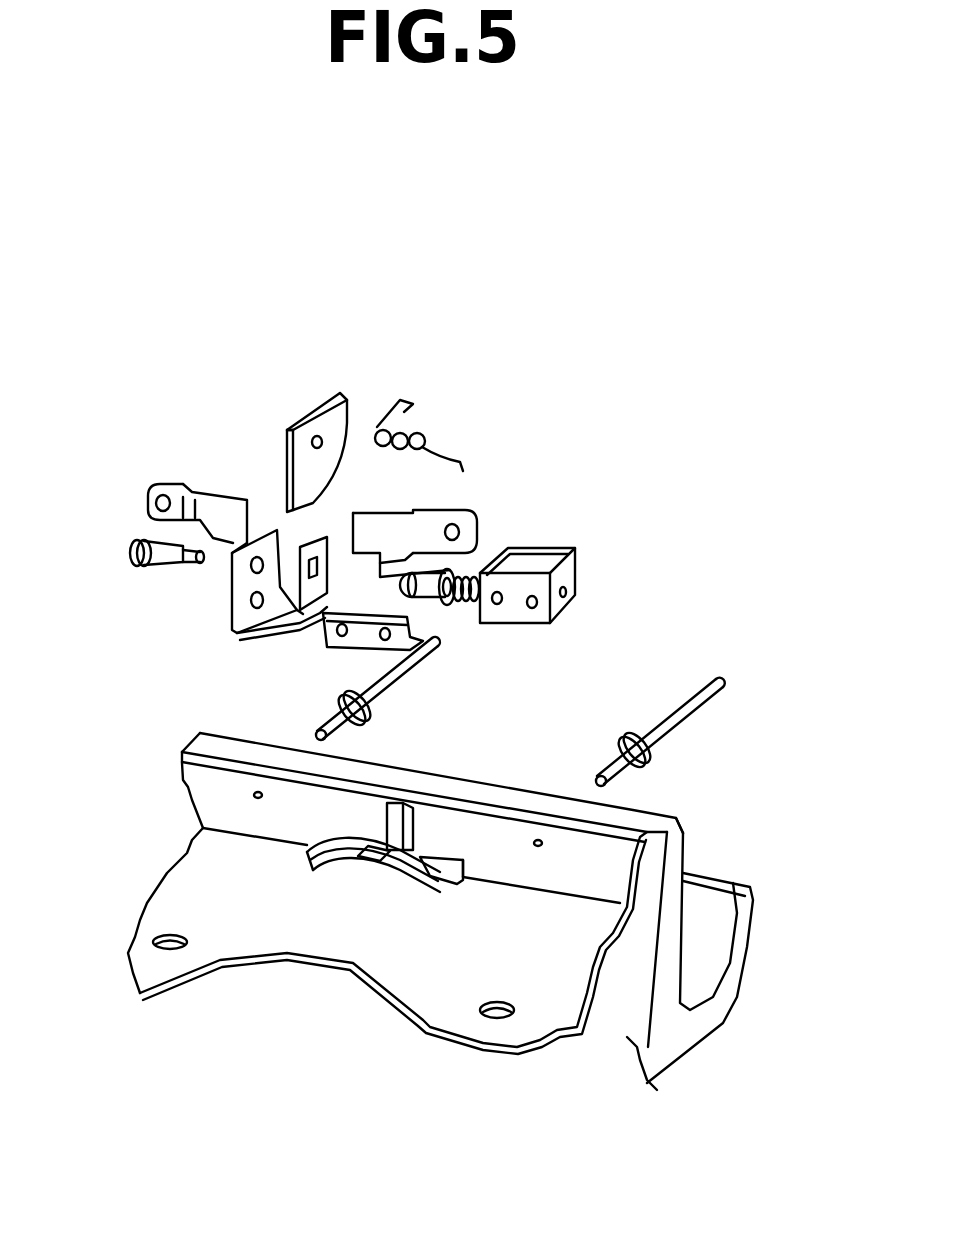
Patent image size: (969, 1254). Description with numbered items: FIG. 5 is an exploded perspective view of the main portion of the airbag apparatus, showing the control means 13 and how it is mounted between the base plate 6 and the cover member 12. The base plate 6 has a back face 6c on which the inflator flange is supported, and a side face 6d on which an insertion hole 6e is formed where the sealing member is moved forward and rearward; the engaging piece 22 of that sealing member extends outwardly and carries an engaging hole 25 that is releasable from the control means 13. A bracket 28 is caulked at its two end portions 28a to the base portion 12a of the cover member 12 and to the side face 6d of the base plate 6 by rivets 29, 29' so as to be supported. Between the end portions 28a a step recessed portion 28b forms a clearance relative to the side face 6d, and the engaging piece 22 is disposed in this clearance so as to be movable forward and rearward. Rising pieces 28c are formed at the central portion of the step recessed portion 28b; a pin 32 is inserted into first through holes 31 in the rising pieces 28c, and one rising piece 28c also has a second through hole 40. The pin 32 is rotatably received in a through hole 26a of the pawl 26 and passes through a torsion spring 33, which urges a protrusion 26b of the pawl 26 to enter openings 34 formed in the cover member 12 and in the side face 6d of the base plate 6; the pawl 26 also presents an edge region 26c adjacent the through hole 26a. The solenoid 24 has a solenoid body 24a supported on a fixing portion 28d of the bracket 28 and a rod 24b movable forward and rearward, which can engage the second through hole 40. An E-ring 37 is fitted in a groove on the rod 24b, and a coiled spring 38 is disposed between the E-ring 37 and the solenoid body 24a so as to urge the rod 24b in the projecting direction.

The base plate 6 is at (449, 925).
The back face 6c is at (550, 1000).
The side face 6d is at (617, 840).
The insertion hole 6e is at (463, 862).
The cover member 12 is at (739, 967).
The base portion 12a is at (680, 833).
The control means 13 is at (644, 388).
The engaging piece 22 is at (350, 870).
The solenoid 24 is at (556, 587).
The solenoid body 24a is at (591, 551).
The rod 24b is at (457, 567).
The engaging hole 25 is at (313, 840).
The pawl 26 is at (284, 376).
The through hole 26a is at (290, 423).
The protrusion 26b is at (374, 339).
The lever pivot hole 26c is at (287, 458).
The bracket 28 is at (334, 564).
The end portions 28a is at (163, 483).
The step recessed portion 28b is at (205, 524).
The rising pieces 28c is at (233, 613).
The fixing portion 28d is at (367, 633).
The rivet 29 is at (388, 691).
The rivet 29' is at (723, 712).
The first through holes 31 is at (230, 587).
The pin 32 is at (140, 567).
The torsion spring 33 is at (427, 420).
The openings 34 is at (397, 813).
The E-ring 37 is at (452, 607).
The coiled spring 38 is at (463, 610).
The second through hole 40 is at (250, 607).